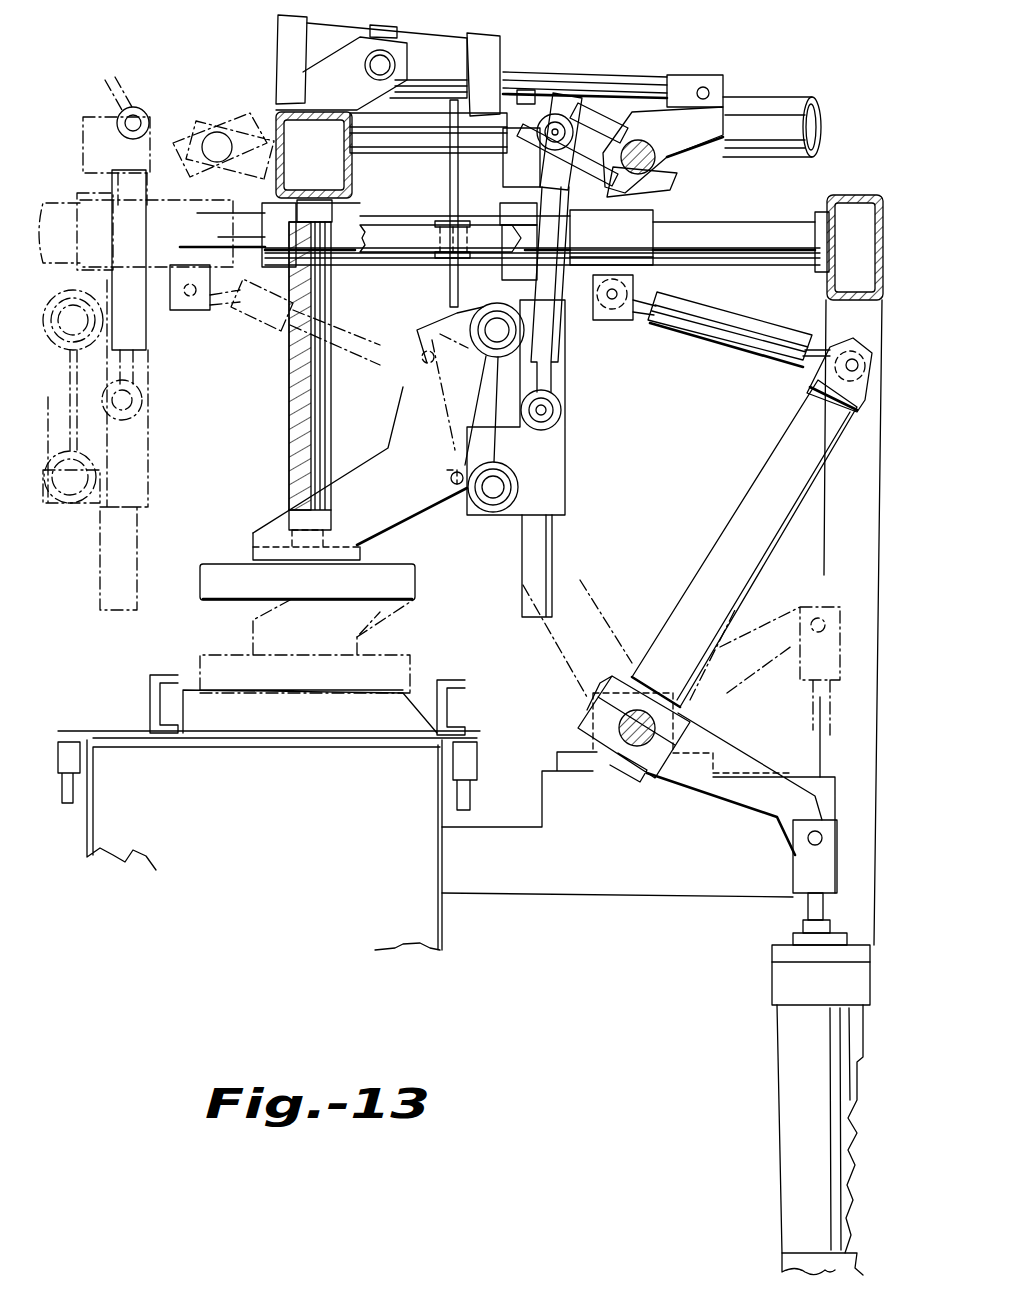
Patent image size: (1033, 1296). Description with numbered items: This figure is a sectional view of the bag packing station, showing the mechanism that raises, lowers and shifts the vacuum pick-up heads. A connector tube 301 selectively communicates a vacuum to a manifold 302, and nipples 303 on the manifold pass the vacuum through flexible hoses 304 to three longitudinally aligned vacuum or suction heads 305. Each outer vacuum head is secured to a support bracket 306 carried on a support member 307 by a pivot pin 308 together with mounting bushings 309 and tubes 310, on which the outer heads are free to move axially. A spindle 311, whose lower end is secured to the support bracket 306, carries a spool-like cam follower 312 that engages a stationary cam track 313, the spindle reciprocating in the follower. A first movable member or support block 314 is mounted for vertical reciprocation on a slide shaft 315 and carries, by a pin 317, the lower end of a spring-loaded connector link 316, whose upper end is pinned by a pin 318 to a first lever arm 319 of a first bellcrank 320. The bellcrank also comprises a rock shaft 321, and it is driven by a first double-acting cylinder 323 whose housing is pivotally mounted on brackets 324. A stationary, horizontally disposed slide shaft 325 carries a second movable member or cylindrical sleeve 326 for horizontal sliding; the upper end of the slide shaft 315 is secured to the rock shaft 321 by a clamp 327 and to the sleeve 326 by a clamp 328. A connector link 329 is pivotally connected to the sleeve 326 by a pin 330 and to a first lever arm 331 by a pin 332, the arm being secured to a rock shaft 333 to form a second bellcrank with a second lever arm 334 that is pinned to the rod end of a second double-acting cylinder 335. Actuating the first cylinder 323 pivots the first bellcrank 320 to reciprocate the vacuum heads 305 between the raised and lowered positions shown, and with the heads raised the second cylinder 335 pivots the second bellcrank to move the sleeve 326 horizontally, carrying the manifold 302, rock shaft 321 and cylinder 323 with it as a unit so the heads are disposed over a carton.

The connector tube 301 is at (792, 103).
The manifold 302 is at (294, 163).
The nipples 303 is at (262, 217).
The flexible hoses 304 is at (297, 462).
The vacuum heads 305 is at (283, 588).
The support bracket 306 is at (400, 428).
The support member 307 is at (465, 492).
The pivot pin 308 is at (447, 480).
The mounting bushings 309 is at (470, 323).
The tubes 310 is at (503, 293).
The spindle 311 is at (450, 165).
The cam follower 312 is at (440, 220).
The cam track 313 is at (400, 245).
The support block 314 is at (566, 480).
The slide shaft 315 is at (530, 612).
The connector link 316 is at (570, 305).
The pin 317 is at (562, 412).
The pin 318 is at (533, 127).
The first lever arm 319 is at (581, 92).
The first bellcrank 320 is at (607, 100).
The rock shaft 321 is at (672, 180).
The first double-acting cylinder 323 is at (449, 63).
The brackets 324 is at (303, 83).
The slide shaft 325 is at (720, 245).
The cylindrical sleeve 326 is at (590, 239).
The clamp 327 is at (503, 166).
The clamp 328 is at (506, 224).
The connector link 329 is at (747, 327).
The pin 330 is at (637, 292).
The first lever arm 331 is at (789, 442).
The pin 332 is at (717, 113).
The rock shaft 333 is at (603, 757).
The second lever arm 334 is at (737, 792).
The second double-acting cylinder 335 is at (782, 1091).